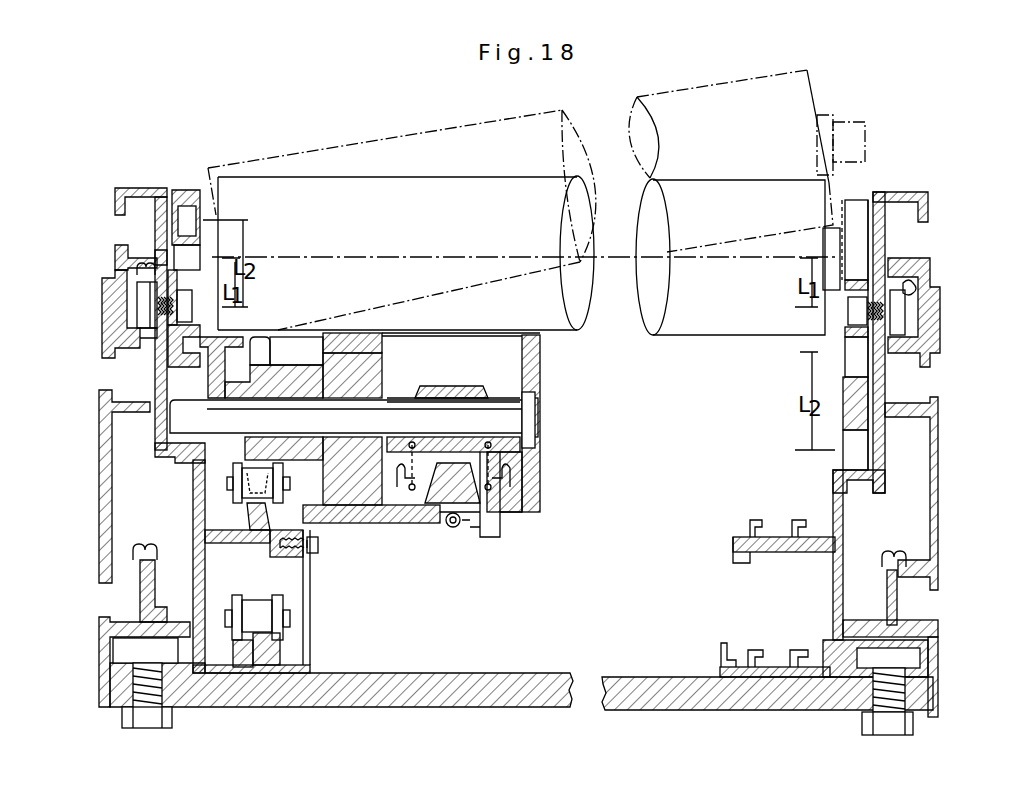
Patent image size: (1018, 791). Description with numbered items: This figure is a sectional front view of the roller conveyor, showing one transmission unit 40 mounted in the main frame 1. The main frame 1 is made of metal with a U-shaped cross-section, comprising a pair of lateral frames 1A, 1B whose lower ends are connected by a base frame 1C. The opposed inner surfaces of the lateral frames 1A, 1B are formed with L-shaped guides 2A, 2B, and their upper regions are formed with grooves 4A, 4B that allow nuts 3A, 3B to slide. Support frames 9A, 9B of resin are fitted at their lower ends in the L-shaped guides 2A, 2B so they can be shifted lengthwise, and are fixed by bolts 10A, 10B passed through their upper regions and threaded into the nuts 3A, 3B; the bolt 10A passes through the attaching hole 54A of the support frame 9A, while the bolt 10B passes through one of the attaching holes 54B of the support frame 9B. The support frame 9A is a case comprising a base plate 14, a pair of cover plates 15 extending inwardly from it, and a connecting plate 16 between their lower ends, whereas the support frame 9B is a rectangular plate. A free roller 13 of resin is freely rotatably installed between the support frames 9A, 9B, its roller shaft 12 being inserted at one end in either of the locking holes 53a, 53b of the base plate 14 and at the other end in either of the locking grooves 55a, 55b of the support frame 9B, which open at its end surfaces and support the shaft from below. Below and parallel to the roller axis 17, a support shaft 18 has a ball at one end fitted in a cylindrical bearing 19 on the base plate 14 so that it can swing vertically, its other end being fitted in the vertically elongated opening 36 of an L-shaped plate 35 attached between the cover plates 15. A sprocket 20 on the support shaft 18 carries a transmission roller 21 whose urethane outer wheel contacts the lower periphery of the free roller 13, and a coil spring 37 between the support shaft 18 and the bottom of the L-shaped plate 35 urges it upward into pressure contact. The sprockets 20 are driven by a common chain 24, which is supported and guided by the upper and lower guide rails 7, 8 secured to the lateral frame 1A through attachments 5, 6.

The main frame 1 is at (100, 705).
The lateral frame 1A is at (105, 545).
The lateral frame 1B is at (938, 543).
The base frame 1C is at (483, 690).
The L-shaped guide 2A is at (165, 460).
The L-shaped guide 2B is at (880, 463).
The nut 3A is at (147, 303).
The nut 3B is at (892, 313).
The groove 4A is at (137, 275).
The groove 4B is at (907, 278).
The attachment 5 is at (228, 520).
The attachment 6 is at (282, 660).
The upper guide rail 7 is at (200, 533).
The lower guide rail 8 is at (250, 660).
The support frame 9A is at (185, 192).
The support frame 9B is at (882, 385).
The bolt 10A is at (192, 310).
The bolt 10B is at (848, 317).
The roller shaft 12 is at (832, 240).
The free roller 13 is at (407, 178).
The base plate 14 is at (155, 365).
The cover plate 15 is at (492, 348).
The connecting plate 16 is at (396, 522).
The roller axis 17 is at (485, 257).
The support shaft 18 is at (353, 413).
The cylindrical bearing 19 is at (207, 402).
The sprocket 20 is at (272, 337).
The transmission roller 21 is at (360, 337).
The chain 24 is at (220, 485).
The L-shaped plate 35 is at (528, 480).
The elongated opening 36 is at (527, 442).
The coil spring 37 is at (436, 515).
The transmission unit 40 is at (512, 545).
The locking hole 53a is at (155, 257).
The locking hole 53b is at (143, 197).
The attaching hole 54A is at (183, 305).
The attaching hole 54B is at (907, 353).
The locking groove 55a is at (887, 230).
The locking groove 55b is at (853, 442).